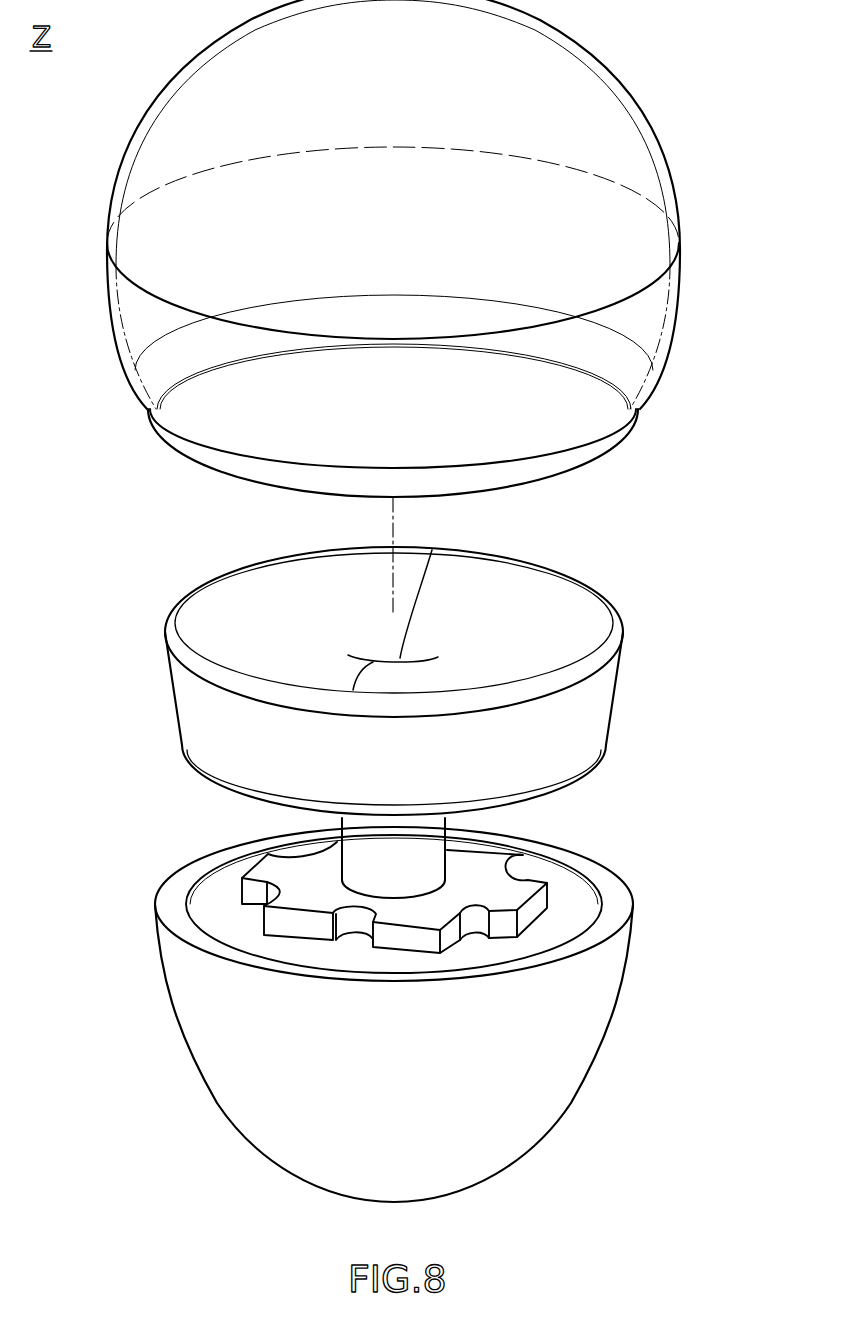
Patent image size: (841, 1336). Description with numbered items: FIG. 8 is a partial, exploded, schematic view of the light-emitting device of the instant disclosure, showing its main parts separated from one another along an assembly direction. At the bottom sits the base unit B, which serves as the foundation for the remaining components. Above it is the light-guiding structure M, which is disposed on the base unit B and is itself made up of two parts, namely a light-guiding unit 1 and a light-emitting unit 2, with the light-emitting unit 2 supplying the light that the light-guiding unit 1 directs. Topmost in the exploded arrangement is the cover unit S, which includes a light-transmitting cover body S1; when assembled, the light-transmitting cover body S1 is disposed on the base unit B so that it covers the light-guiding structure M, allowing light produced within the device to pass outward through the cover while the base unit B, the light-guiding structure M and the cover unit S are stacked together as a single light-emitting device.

The cover unit S is at (105, 321).
The light-transmitting cover body S1 is at (668, 307).
The light-guiding structure M is at (78, 722).
The light-guiding unit 1 is at (213, 723).
The light-emitting unit 2 is at (295, 874).
The base unit B is at (195, 1076).